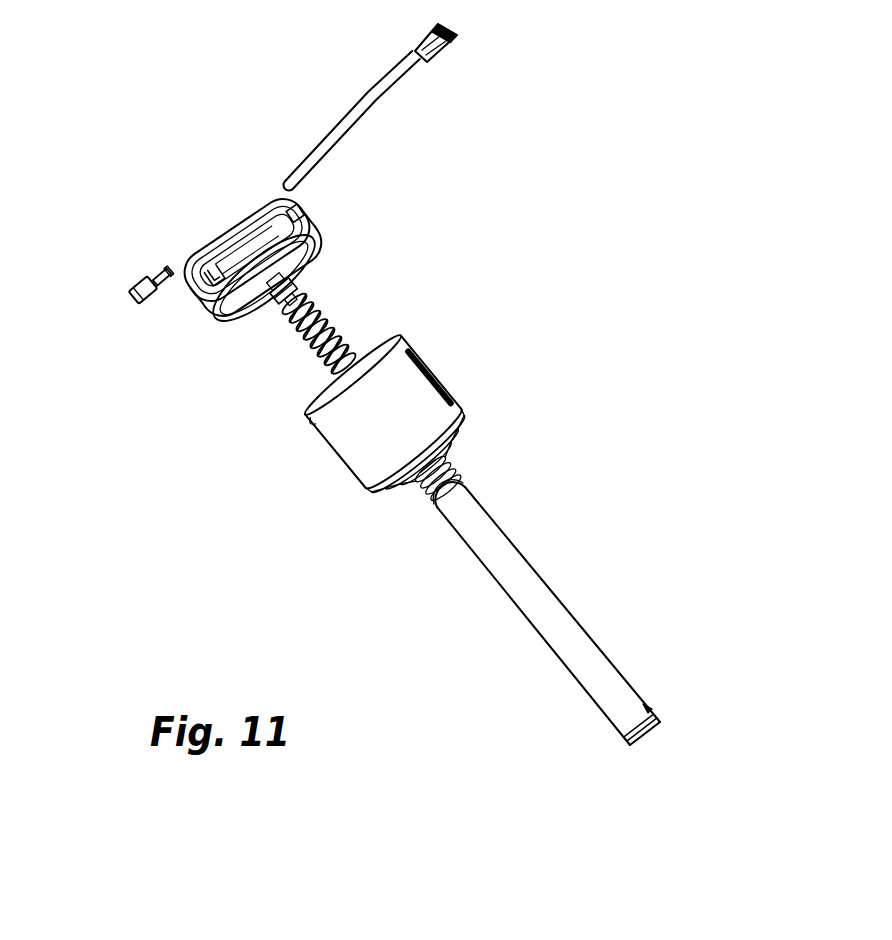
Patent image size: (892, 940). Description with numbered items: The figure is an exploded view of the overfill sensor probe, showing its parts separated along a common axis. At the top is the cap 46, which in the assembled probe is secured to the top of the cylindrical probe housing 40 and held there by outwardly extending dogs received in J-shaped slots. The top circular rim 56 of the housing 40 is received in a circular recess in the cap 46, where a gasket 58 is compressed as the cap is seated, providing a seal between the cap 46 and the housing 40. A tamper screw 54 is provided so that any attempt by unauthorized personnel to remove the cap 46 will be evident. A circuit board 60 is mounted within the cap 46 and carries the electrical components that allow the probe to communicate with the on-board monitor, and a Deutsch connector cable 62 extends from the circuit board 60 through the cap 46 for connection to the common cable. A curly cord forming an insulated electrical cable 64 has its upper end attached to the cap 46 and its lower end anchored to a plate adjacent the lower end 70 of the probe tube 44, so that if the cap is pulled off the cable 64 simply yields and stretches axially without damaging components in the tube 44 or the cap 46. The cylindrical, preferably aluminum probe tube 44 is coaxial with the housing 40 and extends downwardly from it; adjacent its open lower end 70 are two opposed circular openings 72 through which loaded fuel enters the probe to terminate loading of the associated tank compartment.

The probe housing 40 is at (338, 460).
The probe tube 44 is at (562, 603).
The cap 46 is at (255, 205).
The tamper screw 54 is at (152, 266).
The rim 56 is at (377, 340).
The gasket 58 is at (318, 243).
The circuit board 60 is at (240, 323).
The Deutsch connector cable 62 is at (404, 77).
The insulated electrical cable 64 is at (310, 346).
The lower end 70 is at (646, 749).
The circular openings 72 is at (648, 708).